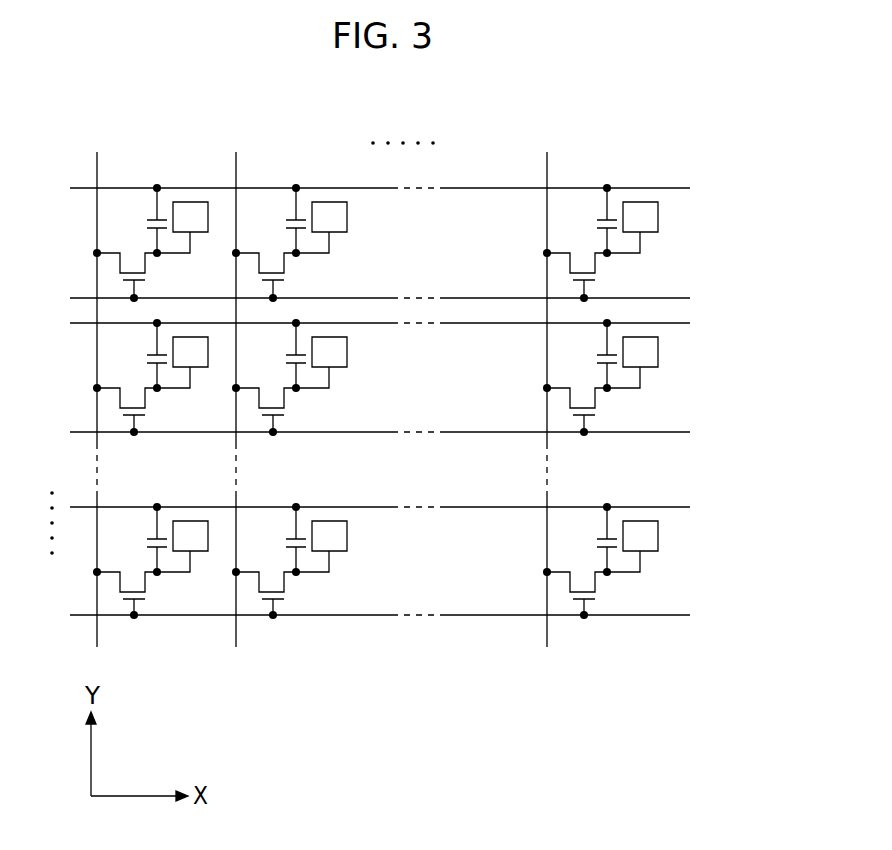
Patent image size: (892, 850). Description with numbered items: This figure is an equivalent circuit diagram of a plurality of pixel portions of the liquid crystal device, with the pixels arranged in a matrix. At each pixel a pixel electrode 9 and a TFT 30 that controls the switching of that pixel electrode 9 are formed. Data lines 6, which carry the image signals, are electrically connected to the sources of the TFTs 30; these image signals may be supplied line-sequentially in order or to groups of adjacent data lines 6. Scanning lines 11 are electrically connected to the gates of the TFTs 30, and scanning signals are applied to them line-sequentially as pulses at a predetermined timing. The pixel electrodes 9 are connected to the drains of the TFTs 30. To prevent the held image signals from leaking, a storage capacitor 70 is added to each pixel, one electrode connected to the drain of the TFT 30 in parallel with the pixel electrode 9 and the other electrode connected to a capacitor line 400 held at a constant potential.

The data line 6 is at (588, 152).
The capacitor line 400 is at (717, 524).
The scanning line 11 is at (735, 615).
The storage capacitor 70 is at (147, 226).
The pixel electrode 9 is at (683, 566).
The TFT 30 is at (112, 264).